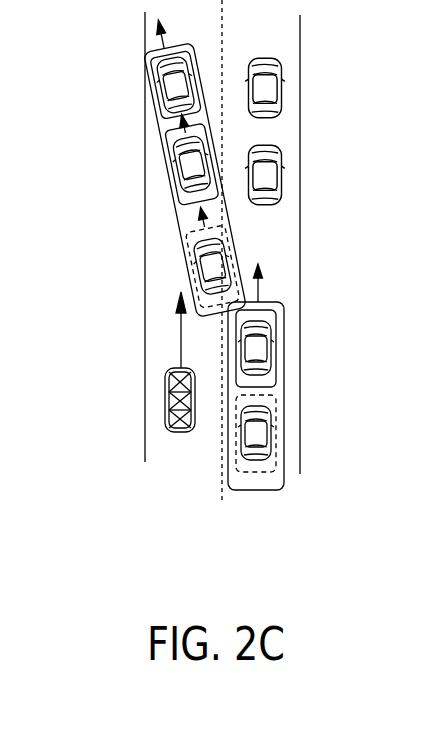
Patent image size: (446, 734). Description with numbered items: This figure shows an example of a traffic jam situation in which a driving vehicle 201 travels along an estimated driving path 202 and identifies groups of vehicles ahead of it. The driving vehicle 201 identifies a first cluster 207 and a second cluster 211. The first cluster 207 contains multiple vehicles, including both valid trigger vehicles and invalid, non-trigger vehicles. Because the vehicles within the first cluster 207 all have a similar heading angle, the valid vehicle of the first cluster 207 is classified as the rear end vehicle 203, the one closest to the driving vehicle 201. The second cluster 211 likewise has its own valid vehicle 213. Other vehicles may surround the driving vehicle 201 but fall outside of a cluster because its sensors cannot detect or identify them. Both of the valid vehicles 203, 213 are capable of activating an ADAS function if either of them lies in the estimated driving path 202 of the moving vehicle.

The driving vehicle 201 is at (167, 416).
The estimated driving path 202 is at (181, 347).
The valid vehicle 203 is at (212, 266).
The first cluster 207 is at (158, 165).
The second vehicle group / platoon 211 is at (285, 463).
The second cluster 213 is at (227, 478).